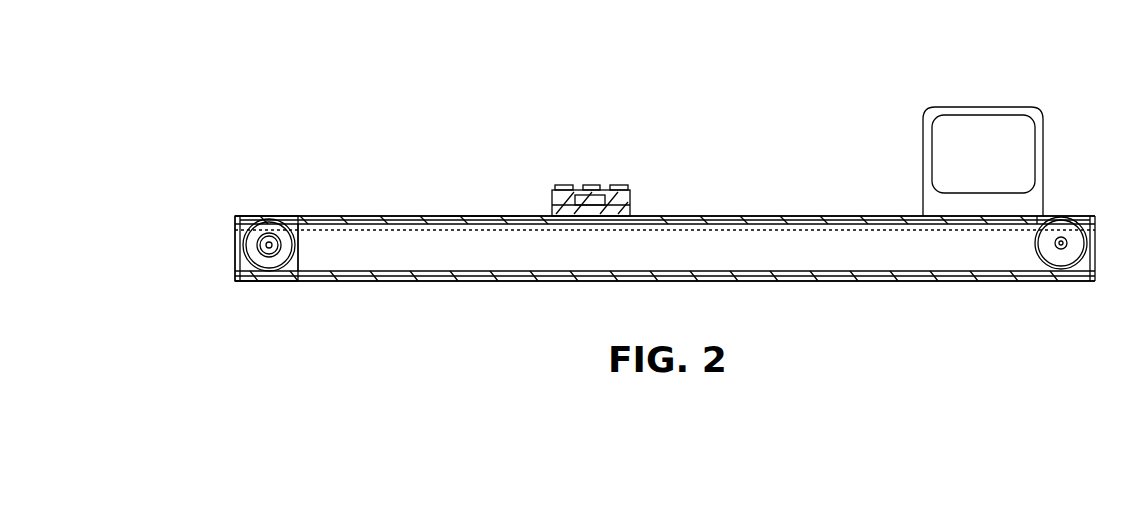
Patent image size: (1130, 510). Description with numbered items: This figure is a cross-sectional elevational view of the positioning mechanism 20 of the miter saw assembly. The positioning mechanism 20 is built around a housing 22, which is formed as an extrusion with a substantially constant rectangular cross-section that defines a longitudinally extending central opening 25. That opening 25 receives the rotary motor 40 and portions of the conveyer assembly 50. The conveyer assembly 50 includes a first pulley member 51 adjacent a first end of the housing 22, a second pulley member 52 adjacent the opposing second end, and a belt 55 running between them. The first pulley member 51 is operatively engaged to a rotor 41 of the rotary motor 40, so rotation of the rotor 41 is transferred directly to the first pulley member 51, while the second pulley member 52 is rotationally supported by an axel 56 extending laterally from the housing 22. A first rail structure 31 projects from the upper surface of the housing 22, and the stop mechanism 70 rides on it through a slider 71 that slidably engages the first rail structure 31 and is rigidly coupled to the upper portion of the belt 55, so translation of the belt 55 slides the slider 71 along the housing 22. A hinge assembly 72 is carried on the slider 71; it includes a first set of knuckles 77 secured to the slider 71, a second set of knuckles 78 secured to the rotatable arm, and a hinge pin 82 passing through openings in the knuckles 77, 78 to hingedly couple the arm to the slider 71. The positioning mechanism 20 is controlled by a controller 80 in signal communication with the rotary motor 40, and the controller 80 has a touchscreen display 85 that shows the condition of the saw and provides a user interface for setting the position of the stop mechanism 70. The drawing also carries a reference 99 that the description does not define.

The positioning mechanism 20 is at (547, 100).
The housing 22 is at (465, 283).
The central opening 25 is at (680, 261).
The first rail structure 31 is at (472, 217).
The rotary motor 40 is at (300, 251).
The rotor 41 is at (270, 247).
The conveyer assembly 50 is at (250, 215).
The first pulley member 51 is at (279, 264).
The second pulley member 52 is at (1062, 248).
The belt 55 is at (275, 218).
The axel 56 is at (1068, 262).
The stop mechanism 70 is at (629, 167).
The slider 71 is at (548, 205).
The hinge assembly 72 is at (638, 190).
The first set of knuckles 77 is at (560, 190).
The second set of knuckles 78 is at (578, 190).
The controller 80 is at (1036, 110).
The hinge pin 82 is at (592, 190).
The touchscreen display 85 is at (975, 120).
The controller 99 is at (813, 0).